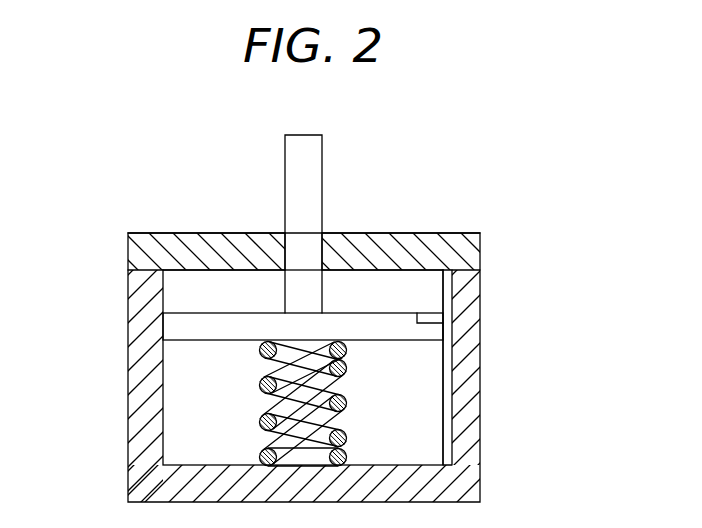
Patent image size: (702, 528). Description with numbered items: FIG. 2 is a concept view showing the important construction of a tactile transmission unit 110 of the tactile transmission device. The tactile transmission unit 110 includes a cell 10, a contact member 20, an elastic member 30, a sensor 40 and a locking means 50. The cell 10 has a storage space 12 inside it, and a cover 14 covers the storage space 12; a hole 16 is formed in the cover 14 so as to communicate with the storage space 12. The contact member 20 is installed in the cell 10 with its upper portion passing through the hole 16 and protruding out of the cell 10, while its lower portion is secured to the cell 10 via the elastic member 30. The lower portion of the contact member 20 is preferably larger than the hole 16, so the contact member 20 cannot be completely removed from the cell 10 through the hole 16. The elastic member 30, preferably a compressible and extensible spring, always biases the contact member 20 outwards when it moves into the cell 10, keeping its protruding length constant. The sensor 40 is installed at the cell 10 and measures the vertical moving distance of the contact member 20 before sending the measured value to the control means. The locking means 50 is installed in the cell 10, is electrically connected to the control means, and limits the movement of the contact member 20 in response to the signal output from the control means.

The tactile transmission unit 110 is at (107, 142).
The cell 10 is at (480, 452).
The storage space 12 is at (413, 390).
The cover 14 is at (177, 240).
The hole 16 is at (283, 233).
The contact member 20 is at (322, 190).
The elastic member 30 is at (258, 397).
The sensor 40 is at (512, 278).
The locking means 50 is at (173, 353).